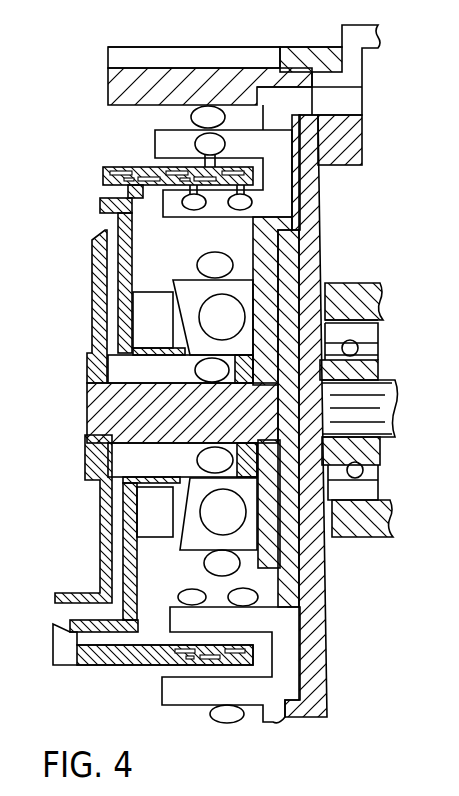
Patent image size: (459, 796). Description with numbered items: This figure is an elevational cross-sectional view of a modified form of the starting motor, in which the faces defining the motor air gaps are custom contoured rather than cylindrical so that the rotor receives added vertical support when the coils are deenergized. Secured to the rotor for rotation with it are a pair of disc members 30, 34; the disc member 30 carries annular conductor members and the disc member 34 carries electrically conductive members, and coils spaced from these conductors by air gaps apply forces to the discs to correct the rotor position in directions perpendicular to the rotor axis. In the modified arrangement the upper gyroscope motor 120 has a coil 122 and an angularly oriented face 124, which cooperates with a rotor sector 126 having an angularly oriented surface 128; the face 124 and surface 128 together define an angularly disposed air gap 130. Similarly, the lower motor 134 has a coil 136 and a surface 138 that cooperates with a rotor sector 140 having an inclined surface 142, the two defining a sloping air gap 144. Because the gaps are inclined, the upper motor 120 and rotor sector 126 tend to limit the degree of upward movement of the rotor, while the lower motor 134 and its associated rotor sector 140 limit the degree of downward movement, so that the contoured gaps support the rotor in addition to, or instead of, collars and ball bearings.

The disc member 30 is at (127, 167).
The disc member 34 is at (102, 665).
The upper gyroscope motor 120 is at (241, 310).
The coil 122 is at (233, 262).
The angularly oriented face 124 is at (173, 282).
The rotor sector 126 is at (168, 332).
The angularly oriented surface 128 is at (175, 292).
The angularly disposed air gap 130 is at (183, 358).
The lower motor 134 is at (242, 520).
The coil 136 is at (197, 460).
The surface 138 is at (178, 540).
The rotor sector 140 is at (168, 532).
The inclined surface 142 is at (133, 493).
The sloping air gap 144 is at (180, 541).